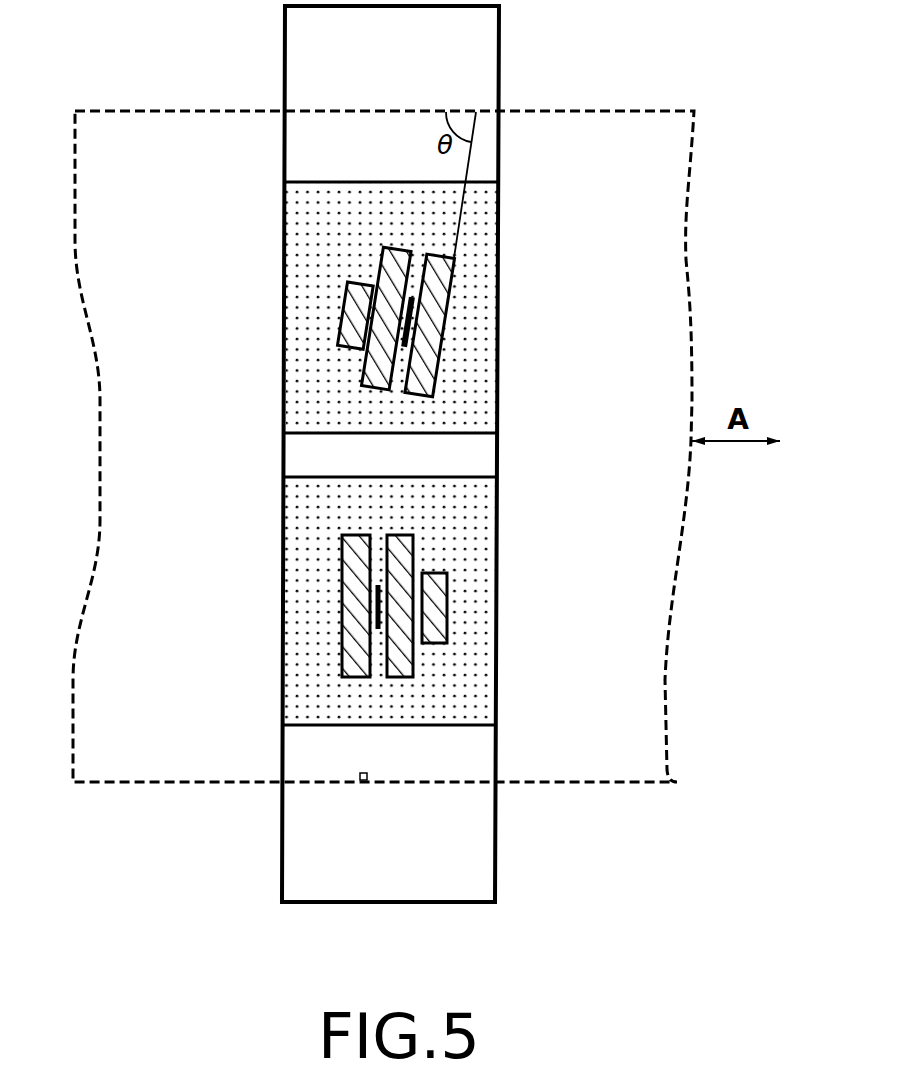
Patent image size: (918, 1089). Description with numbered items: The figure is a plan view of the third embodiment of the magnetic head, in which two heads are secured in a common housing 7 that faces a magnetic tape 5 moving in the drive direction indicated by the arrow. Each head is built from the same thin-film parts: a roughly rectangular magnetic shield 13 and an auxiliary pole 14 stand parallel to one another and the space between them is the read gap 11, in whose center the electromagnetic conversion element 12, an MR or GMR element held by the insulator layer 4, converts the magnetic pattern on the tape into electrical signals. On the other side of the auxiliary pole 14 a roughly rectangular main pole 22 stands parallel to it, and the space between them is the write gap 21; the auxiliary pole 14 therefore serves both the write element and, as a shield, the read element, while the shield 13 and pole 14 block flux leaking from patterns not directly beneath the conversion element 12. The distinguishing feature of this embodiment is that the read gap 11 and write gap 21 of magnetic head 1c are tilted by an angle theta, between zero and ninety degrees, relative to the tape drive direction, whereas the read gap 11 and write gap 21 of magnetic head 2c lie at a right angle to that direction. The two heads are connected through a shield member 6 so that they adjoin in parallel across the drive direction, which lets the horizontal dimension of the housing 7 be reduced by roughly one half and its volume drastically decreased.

The magnetic head 1c is at (522, 341).
The magnetic head 2c is at (518, 579).
The insulator layer 4 is at (295, 400).
The magnetic tape 5 is at (565, 770).
The shield member 6 is at (320, 449).
The housing 7 is at (492, 58).
The read gap 11 is at (418, 256).
The electromagnetic conversion element 12 is at (398, 375).
The magnetic shield 13 is at (454, 260).
The auxiliary pole 14 is at (386, 250).
The write gap 21 is at (372, 270).
The main pole 22 is at (345, 290).